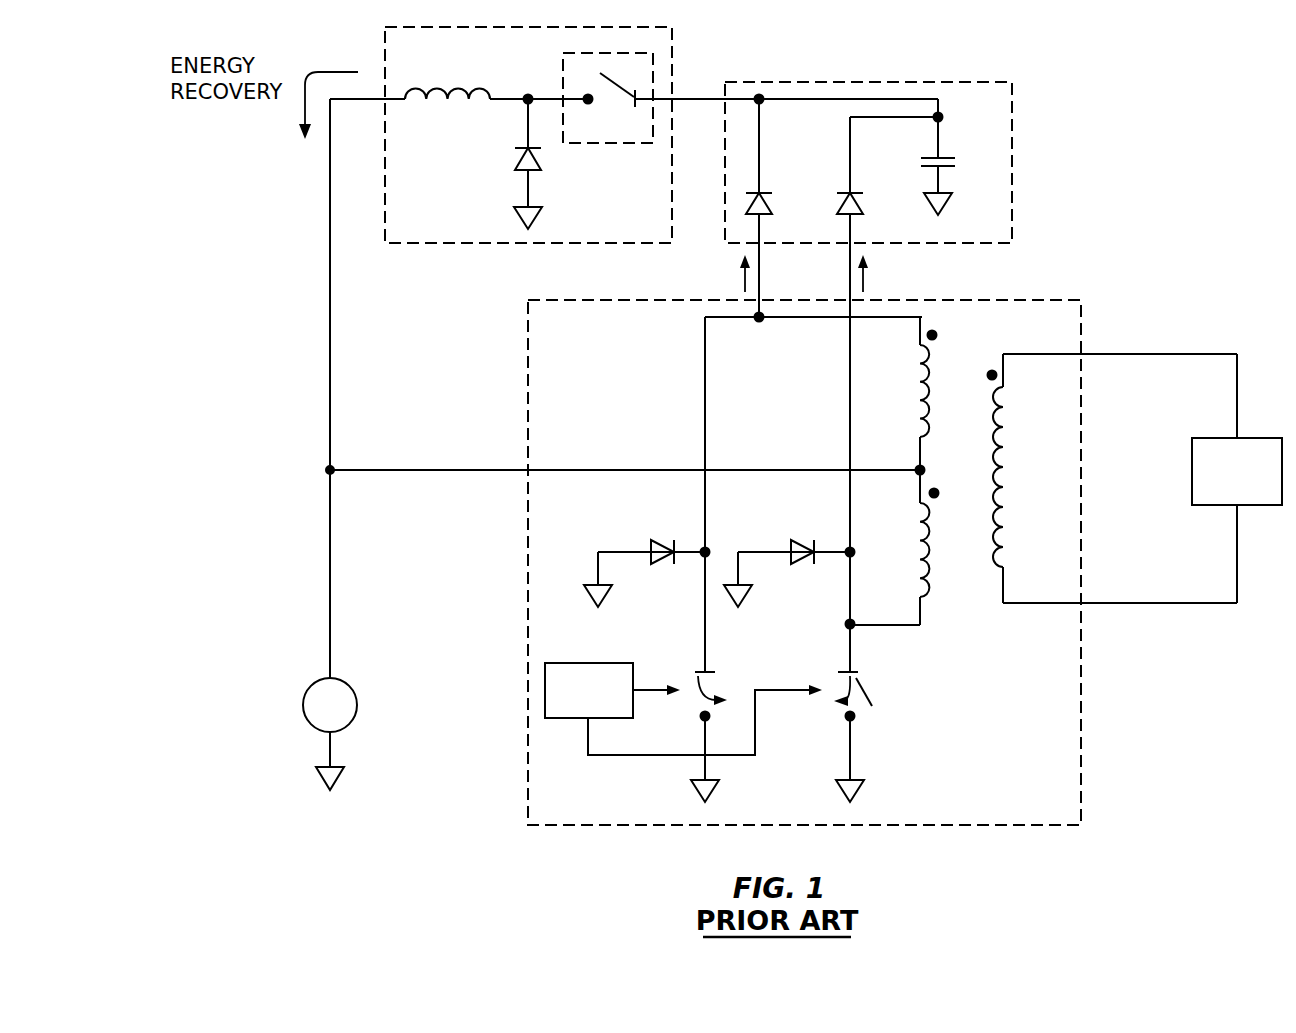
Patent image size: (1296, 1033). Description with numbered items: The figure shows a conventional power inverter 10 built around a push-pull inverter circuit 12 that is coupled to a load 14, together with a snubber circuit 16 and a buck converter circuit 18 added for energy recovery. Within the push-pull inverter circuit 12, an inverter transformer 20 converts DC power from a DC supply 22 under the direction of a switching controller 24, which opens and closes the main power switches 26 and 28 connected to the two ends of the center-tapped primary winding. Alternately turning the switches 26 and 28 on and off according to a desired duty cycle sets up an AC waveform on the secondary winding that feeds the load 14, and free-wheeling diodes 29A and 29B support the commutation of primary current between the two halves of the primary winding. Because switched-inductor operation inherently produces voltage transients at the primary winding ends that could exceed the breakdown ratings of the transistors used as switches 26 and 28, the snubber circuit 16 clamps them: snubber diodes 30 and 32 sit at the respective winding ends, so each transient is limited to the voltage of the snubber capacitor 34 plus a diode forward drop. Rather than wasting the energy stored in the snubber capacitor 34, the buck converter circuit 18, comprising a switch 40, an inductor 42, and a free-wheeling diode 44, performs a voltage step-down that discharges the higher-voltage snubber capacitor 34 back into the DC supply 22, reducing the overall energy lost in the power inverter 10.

The power inverter 10 is at (1168, 220).
The push-pull inverter circuit 12 is at (575, 810).
The load 14 is at (1224, 500).
The snubber circuit 16 is at (977, 111).
The buck converter circuit 18 is at (395, 234).
The inverter transformer 20 is at (1038, 343).
The DC supply 22 is at (317, 717).
The switching controller 24 is at (576, 705).
The main power switch 26 is at (706, 673).
The main power switch 28 is at (851, 673).
The free-wheeling diode 29A is at (789, 570).
The free-wheeling diode 29B is at (647, 559).
The snubber diode 30 is at (760, 192).
The snubber diode 32 is at (851, 192).
The snubber capacitor 34 is at (941, 153).
The switch 40 is at (623, 136).
The inductor 42 is at (440, 87).
The free-wheeling diode 44 is at (533, 170).